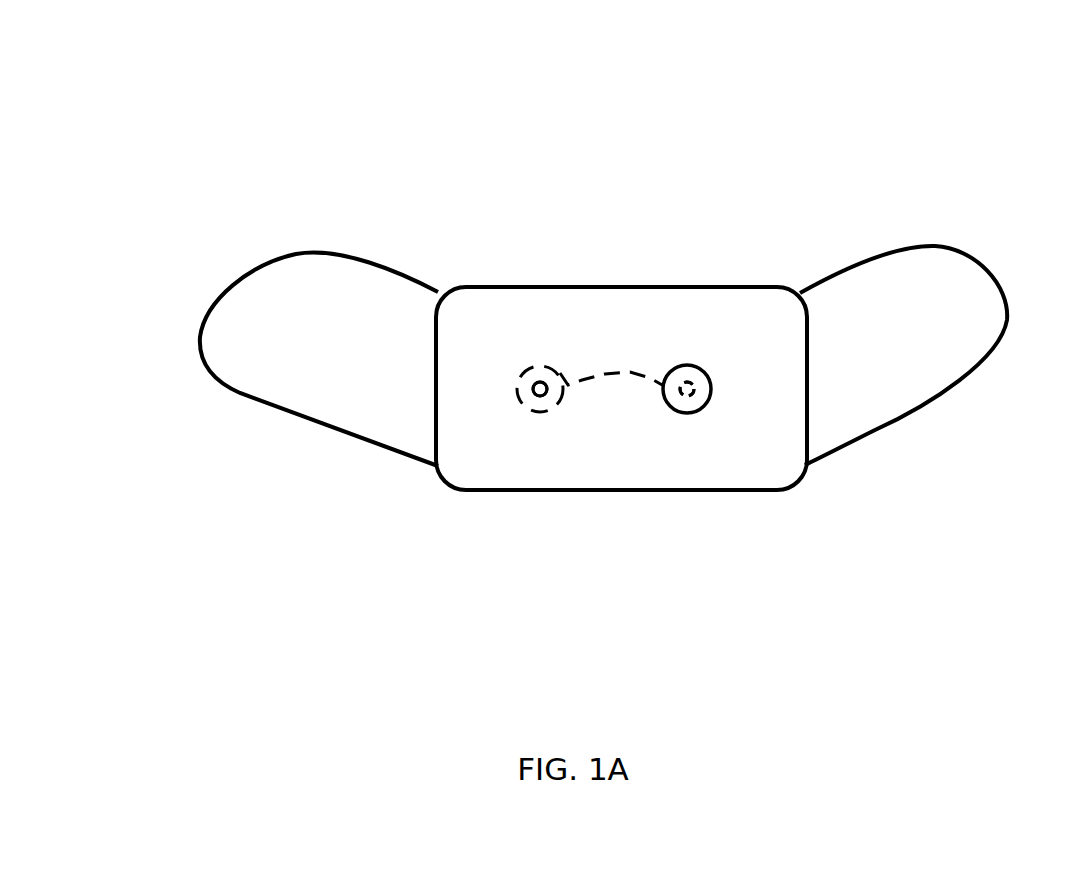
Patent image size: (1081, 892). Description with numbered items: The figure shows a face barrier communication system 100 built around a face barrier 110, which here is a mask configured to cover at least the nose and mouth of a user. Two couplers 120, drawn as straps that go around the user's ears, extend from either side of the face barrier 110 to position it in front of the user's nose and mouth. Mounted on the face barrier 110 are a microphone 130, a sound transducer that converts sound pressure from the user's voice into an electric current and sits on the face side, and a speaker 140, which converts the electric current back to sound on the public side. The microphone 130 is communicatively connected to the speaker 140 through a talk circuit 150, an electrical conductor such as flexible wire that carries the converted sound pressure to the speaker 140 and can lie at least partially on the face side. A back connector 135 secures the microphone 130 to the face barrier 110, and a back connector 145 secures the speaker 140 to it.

The face barrier communication system 100 is at (236, 131).
The face barrier 110 is at (480, 491).
The couplers 120 is at (230, 388).
The microphone 130 is at (538, 365).
The back connector 135 is at (540, 388).
The speaker 140 is at (702, 410).
The back connector 145 is at (690, 387).
The talk circuit 150 is at (630, 381).